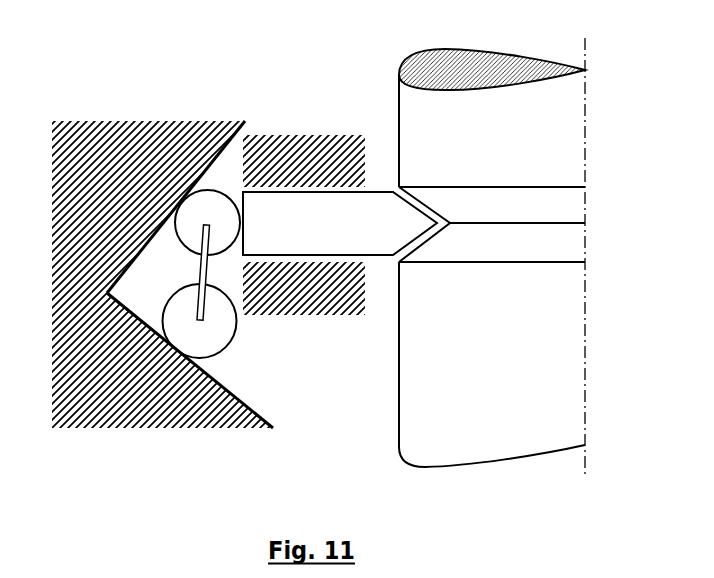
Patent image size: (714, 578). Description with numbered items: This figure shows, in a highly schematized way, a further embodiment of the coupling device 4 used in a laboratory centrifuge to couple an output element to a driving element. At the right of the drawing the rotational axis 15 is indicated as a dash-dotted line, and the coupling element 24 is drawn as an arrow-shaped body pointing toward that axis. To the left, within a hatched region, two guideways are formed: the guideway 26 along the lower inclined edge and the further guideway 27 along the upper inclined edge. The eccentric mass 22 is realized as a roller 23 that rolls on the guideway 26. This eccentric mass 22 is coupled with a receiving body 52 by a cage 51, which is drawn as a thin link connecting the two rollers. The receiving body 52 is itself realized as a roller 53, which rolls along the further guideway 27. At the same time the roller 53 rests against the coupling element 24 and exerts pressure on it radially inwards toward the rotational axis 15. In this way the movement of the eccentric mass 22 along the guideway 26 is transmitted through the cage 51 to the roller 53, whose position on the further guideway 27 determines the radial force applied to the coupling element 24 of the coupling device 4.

The coupling device 4 is at (315, 80).
The rotational axis 15 is at (585, 122).
The eccentric mass 22 is at (237, 329).
The roller 23 is at (215, 345).
The coupling element 24 is at (319, 238).
The guideway 26 is at (247, 410).
The further guideway 27 is at (155, 237).
The cage 51 is at (200, 277).
The receiving body 52 is at (227, 175).
The roller 53 is at (212, 207).